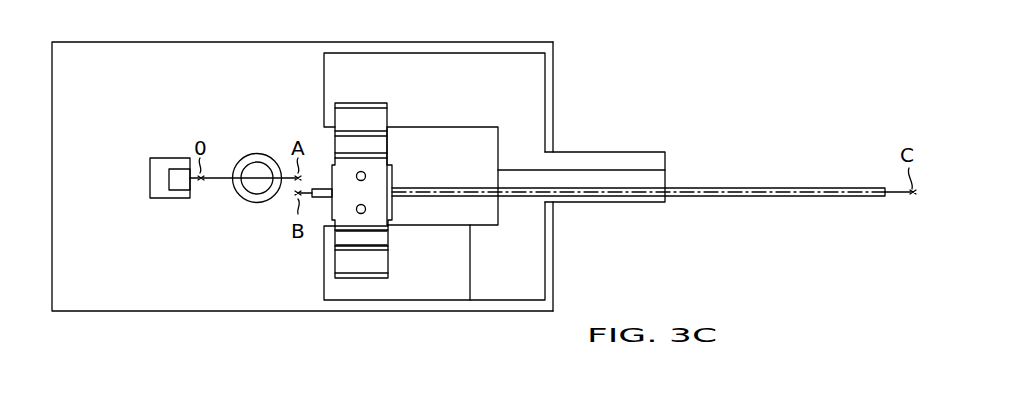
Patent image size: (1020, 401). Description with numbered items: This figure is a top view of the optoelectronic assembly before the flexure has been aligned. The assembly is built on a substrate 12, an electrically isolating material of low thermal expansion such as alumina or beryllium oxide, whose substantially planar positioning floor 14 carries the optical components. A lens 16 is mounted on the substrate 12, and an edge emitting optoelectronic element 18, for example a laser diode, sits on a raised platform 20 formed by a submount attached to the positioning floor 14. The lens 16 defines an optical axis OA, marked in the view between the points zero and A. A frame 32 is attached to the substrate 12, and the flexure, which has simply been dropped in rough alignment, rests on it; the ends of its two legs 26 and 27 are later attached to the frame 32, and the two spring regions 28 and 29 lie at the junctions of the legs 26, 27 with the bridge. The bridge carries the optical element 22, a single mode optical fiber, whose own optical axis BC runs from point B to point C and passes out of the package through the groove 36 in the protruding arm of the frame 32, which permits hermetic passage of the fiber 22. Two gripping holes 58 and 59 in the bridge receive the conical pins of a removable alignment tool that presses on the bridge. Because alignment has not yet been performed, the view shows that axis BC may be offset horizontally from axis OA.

The substrate 12 is at (555, 80).
The positioning floor 14 is at (153, 65).
The lens 16 is at (257, 153).
The edge emitting optoelectronic element 18 is at (178, 182).
The raised platform 20 is at (158, 166).
The optical element 22 is at (789, 186).
The leg 26 is at (368, 117).
The leg 27 is at (360, 267).
The spring region 28 is at (372, 143).
The spring region 29 is at (340, 238).
The frame 32 is at (521, 68).
The groove 36 is at (627, 170).
The gripping hole 58 is at (368, 210).
The gripping hole 59 is at (365, 175).